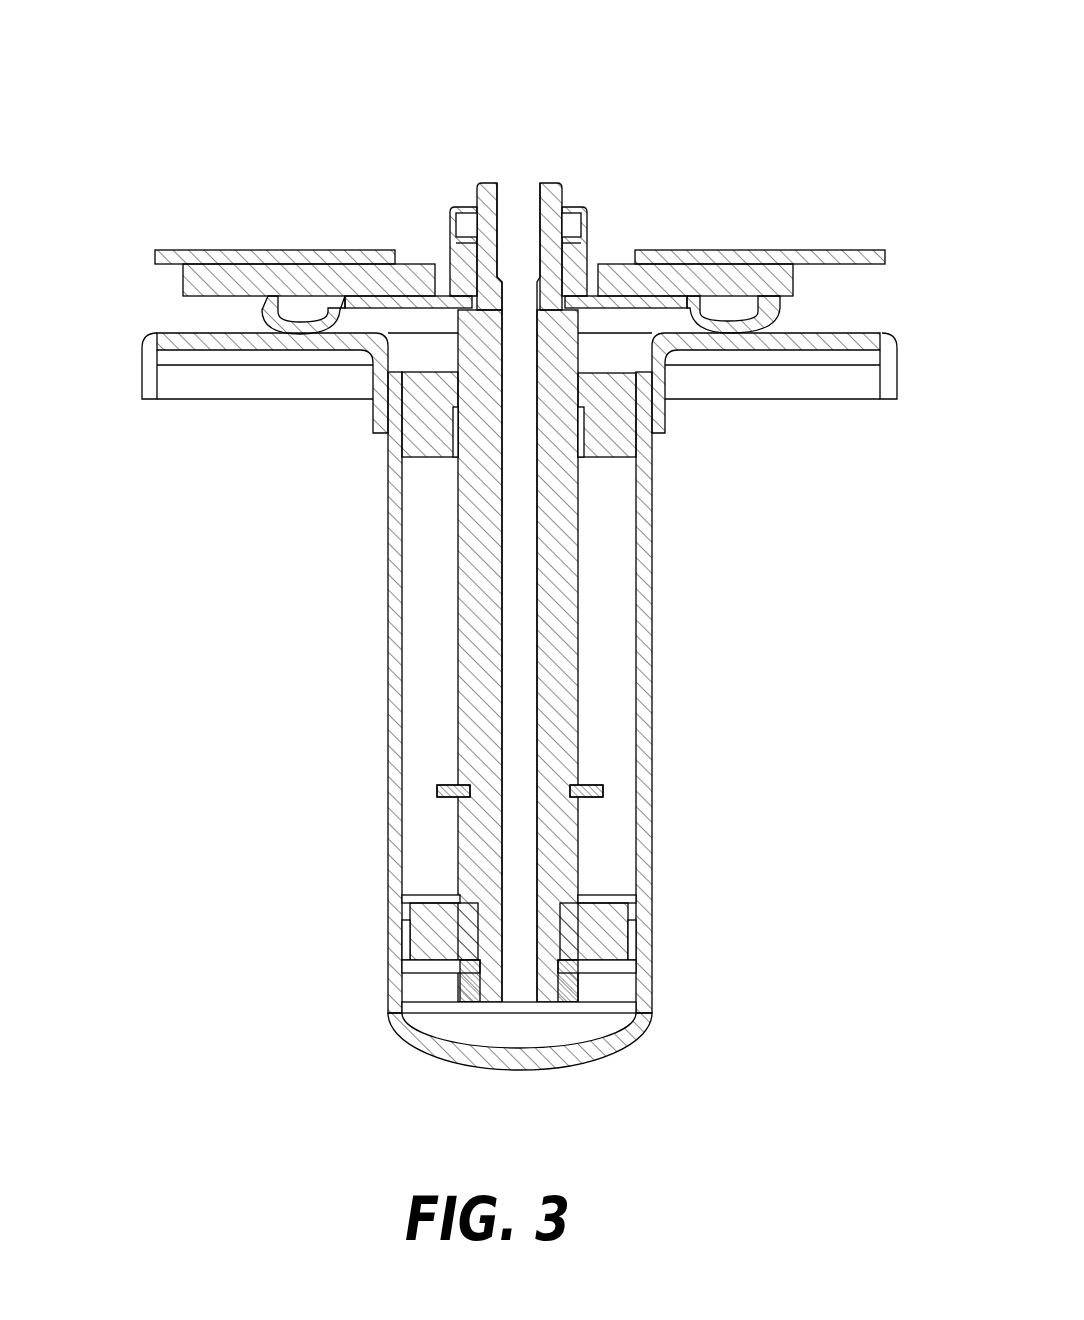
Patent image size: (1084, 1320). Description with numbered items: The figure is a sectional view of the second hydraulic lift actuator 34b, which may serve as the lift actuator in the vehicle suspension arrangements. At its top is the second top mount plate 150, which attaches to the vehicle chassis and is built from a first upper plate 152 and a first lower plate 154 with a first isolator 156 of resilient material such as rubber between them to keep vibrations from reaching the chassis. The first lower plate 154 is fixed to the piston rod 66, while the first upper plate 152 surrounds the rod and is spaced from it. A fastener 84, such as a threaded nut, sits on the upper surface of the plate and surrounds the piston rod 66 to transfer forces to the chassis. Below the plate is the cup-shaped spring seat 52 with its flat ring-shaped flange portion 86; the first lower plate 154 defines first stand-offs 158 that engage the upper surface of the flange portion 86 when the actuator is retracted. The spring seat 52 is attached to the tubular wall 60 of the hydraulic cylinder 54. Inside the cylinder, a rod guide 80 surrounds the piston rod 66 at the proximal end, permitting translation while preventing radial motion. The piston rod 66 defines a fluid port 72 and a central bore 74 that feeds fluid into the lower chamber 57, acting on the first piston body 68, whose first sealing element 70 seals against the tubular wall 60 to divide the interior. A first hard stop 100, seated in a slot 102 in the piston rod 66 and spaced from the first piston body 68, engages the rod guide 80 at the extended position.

The second hydraulic lift actuator 34b is at (150, 57).
The fluid port 72 is at (487, 190).
The central bore 74 is at (560, 208).
The piston rod 66 is at (542, 500).
The fastener 84 is at (457, 265).
The second top mount plate 150 is at (205, 247).
The first upper plate 152 is at (297, 264).
The first lower plate 154 is at (345, 298).
The first isolator 156 is at (690, 273).
The first stand-off 158 is at (262, 303).
The spring seat 52 is at (150, 331).
The flange portion 86 is at (822, 345).
The hydraulic cylinder 54 is at (385, 558).
The tubular wall 60 is at (658, 843).
The rod guide 80 is at (617, 443).
The slot 102 is at (437, 786).
The first hard stop 100 is at (608, 795).
The first piston body 68 is at (422, 913).
The first sealing element 70 is at (406, 941).
The lower chamber 57 is at (622, 1010).